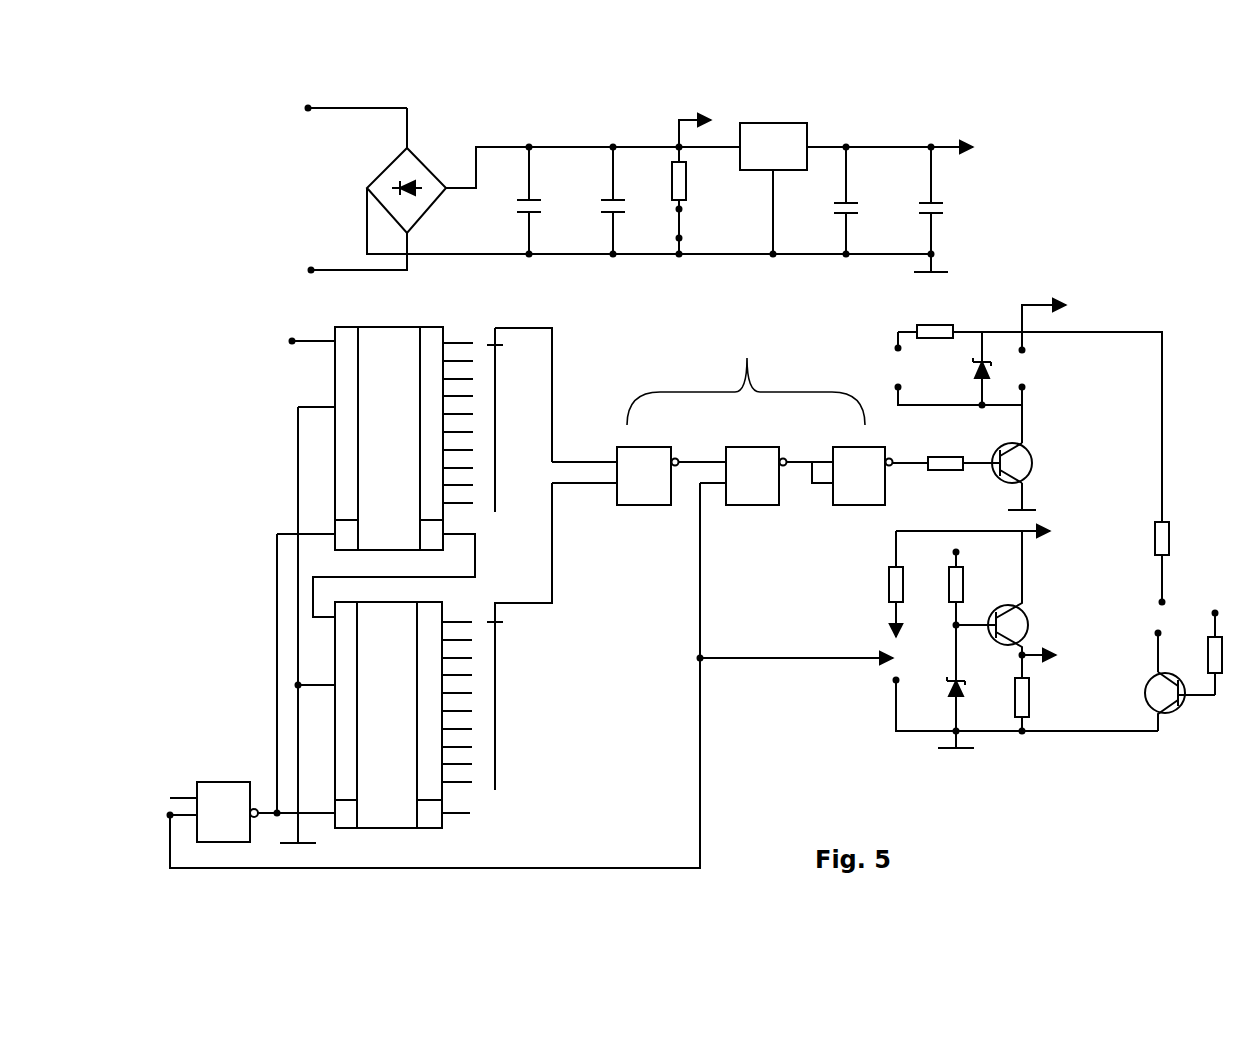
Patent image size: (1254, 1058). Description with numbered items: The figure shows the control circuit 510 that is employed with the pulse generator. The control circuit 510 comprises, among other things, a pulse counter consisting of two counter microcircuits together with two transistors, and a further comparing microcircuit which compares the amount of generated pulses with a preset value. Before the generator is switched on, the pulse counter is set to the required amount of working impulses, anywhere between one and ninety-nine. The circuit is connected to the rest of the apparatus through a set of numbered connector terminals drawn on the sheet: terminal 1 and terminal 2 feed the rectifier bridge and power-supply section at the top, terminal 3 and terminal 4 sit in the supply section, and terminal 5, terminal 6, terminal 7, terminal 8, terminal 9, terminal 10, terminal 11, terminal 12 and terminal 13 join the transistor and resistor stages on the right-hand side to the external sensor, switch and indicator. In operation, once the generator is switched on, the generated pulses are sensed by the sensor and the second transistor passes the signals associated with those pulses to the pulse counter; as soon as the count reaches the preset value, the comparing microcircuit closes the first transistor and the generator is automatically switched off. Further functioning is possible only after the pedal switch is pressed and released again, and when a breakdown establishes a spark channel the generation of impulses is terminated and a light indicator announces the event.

The control circuit 510 is at (1160, 271).
The connector terminal 1 is at (355, 98).
The connector terminal 2 is at (355, 253).
The connector terminal 3 is at (686, 211).
The connector terminal 4 is at (918, 476).
The connector terminal 5 is at (892, 344).
The connector terminal 6 is at (961, 410).
The connector terminal 7 is at (1171, 581).
The connector terminal 8 is at (1167, 648).
The connector terminal 9 is at (1031, 344).
The connector terminal 10 is at (813, 658).
The connector terminal 11 is at (911, 623).
The connector terminal 12 is at (968, 556).
The connector terminal 13 is at (1229, 620).